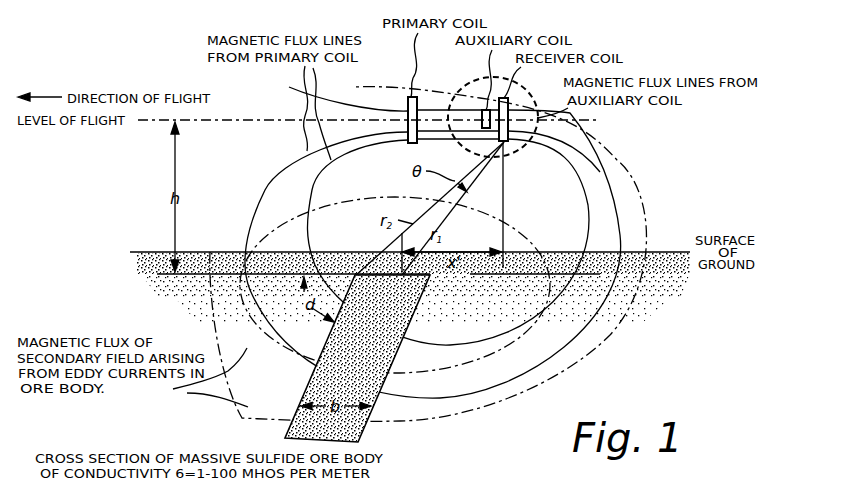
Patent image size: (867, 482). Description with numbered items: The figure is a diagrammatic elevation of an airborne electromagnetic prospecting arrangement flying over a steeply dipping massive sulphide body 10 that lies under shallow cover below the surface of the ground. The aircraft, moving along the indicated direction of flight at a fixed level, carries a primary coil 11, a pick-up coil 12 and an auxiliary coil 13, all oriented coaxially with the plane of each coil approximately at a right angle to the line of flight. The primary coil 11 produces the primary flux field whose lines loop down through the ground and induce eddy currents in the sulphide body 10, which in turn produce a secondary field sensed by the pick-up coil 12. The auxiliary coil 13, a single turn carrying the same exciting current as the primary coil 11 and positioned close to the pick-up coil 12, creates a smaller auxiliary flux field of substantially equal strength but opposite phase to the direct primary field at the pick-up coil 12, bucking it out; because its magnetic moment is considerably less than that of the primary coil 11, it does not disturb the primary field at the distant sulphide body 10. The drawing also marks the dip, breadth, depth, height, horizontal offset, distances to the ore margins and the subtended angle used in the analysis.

The massive sulphide body 10 is at (352, 445).
The primary coil 11 is at (408, 100).
The pick-up coil 12 is at (506, 143).
The auxiliary coil 13 is at (485, 109).